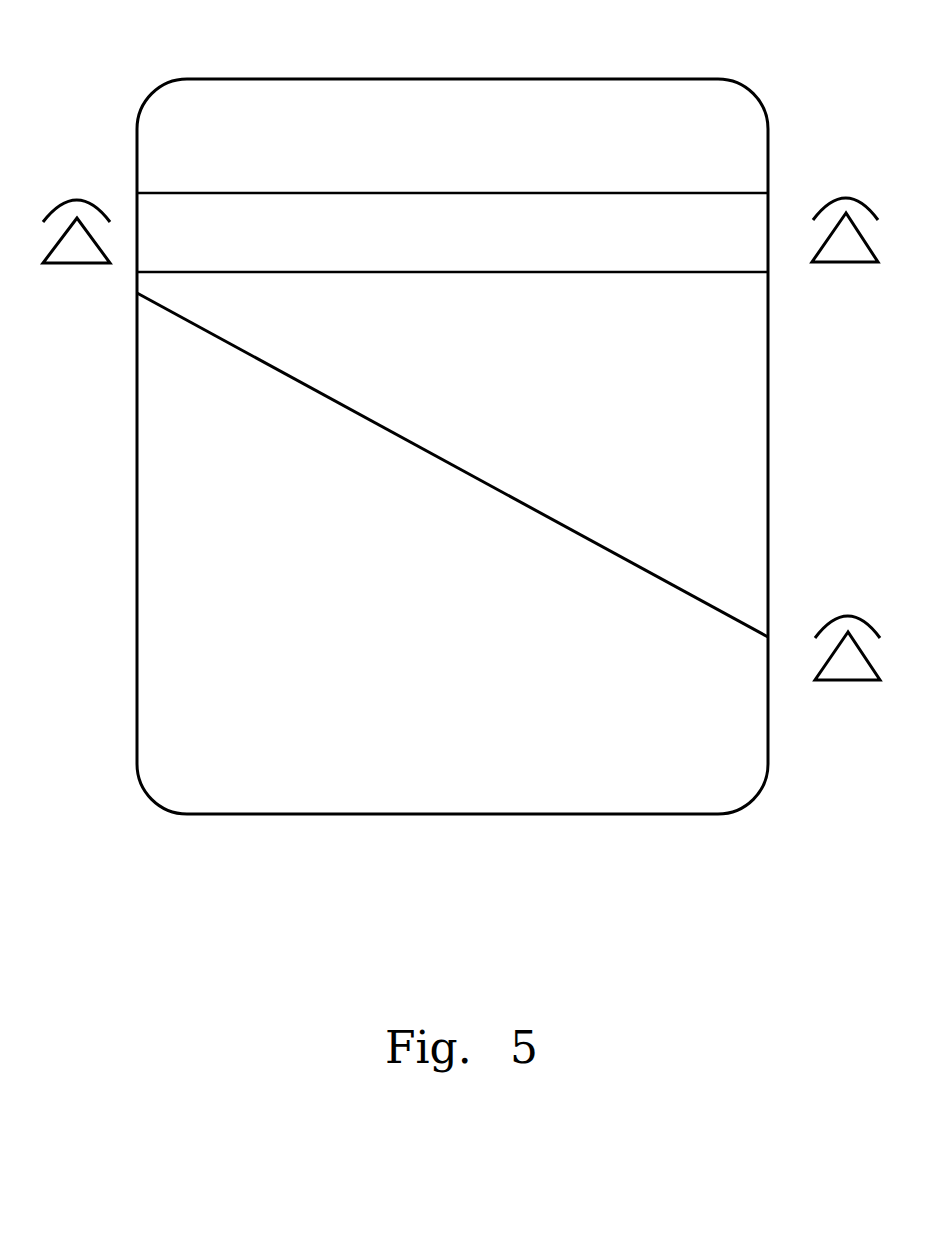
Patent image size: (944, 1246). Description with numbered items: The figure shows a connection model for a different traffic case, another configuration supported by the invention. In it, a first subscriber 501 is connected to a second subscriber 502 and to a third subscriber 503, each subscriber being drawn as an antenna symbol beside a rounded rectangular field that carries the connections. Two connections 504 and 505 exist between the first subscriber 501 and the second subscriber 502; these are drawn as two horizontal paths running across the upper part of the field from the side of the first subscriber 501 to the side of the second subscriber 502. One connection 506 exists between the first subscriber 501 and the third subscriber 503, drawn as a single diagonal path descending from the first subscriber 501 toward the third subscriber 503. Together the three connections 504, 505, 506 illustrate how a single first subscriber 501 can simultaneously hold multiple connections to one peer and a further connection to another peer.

The first subscriber 501 is at (77, 190).
The second subscriber 502 is at (847, 198).
The third subscriber 503 is at (839, 688).
The connection 504 is at (330, 158).
The connection 505 is at (365, 273).
The connection 506 is at (450, 465).